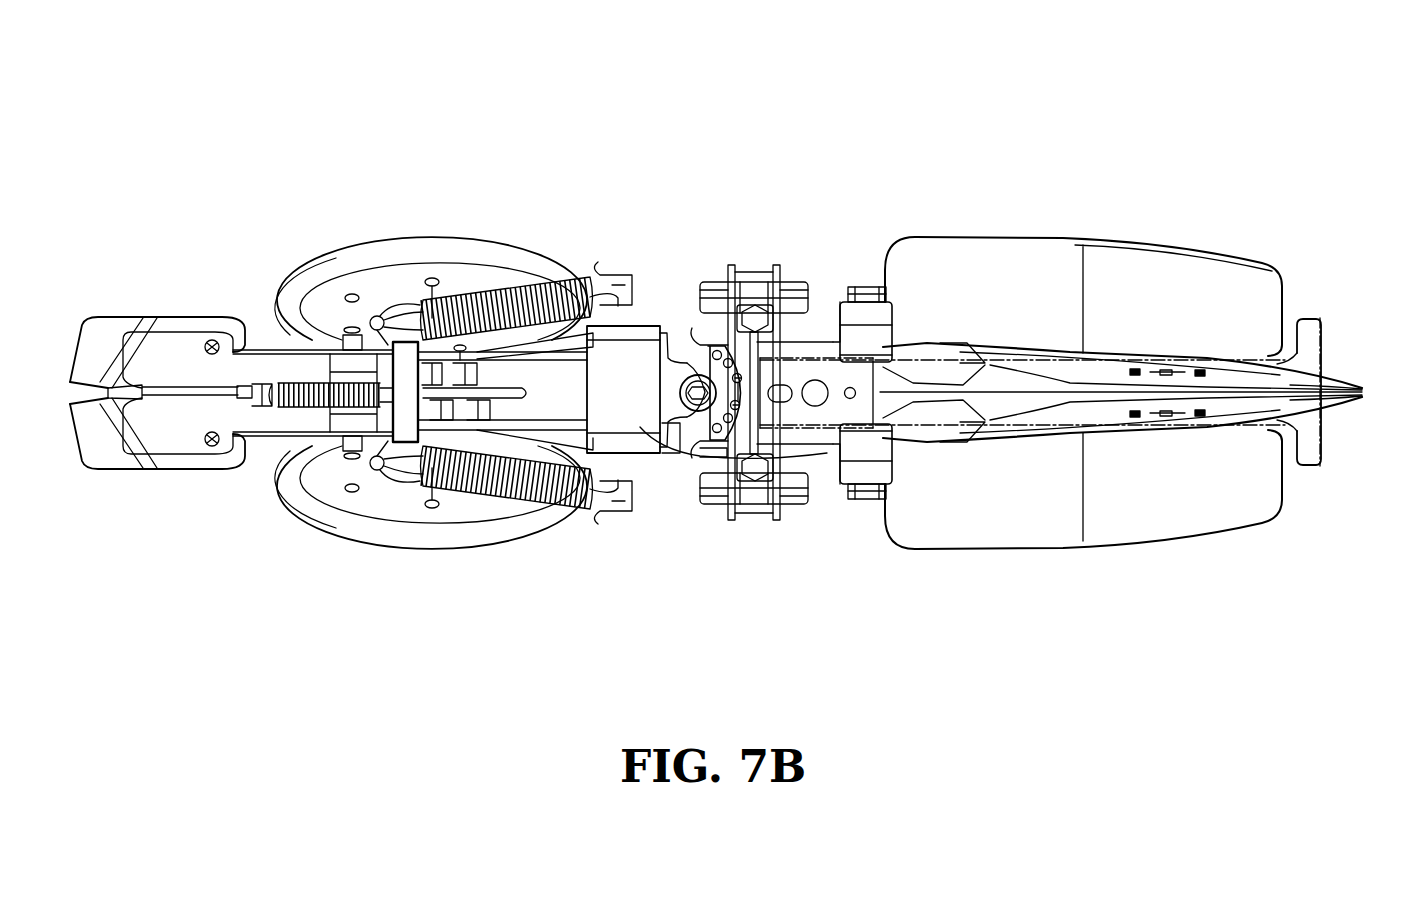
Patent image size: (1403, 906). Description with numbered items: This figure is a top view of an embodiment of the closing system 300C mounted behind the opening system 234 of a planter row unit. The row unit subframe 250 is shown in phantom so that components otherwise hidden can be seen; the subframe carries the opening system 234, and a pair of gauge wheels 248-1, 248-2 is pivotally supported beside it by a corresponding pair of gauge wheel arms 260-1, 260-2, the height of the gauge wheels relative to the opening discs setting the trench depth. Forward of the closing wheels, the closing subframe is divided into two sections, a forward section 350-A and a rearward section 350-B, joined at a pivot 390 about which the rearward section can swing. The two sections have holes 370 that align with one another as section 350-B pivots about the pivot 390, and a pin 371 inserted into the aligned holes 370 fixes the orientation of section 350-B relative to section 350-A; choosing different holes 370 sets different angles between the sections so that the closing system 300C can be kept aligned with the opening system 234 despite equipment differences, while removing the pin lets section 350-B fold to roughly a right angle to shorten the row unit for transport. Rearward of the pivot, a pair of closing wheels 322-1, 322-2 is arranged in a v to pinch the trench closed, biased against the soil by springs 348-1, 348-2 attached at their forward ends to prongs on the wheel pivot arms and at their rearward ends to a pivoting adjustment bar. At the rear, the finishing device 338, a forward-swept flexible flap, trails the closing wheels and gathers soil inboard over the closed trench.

The closing system 300C is at (408, 112).
The opening system 234 is at (1124, 152).
The finishing device 338 is at (188, 345).
The closing wheel 322-1 is at (382, 248).
The closing wheel 322-2 is at (352, 522).
The spring 348-1 is at (495, 265).
The spring 348-2 is at (500, 490).
The subframe section 350-B is at (643, 347).
The subframe section 350-A is at (825, 353).
The pivot 390 is at (673, 397).
The holes 370 is at (700, 440).
The pin 371 is at (818, 428).
The gauge wheel arm 260-1 is at (877, 317).
The gauge wheel arm 260-2 is at (880, 465).
The gauge wheel 248-1 is at (1188, 275).
The gauge wheel 248-2 is at (1205, 512).
The row unit subframe 250 is at (1310, 340).